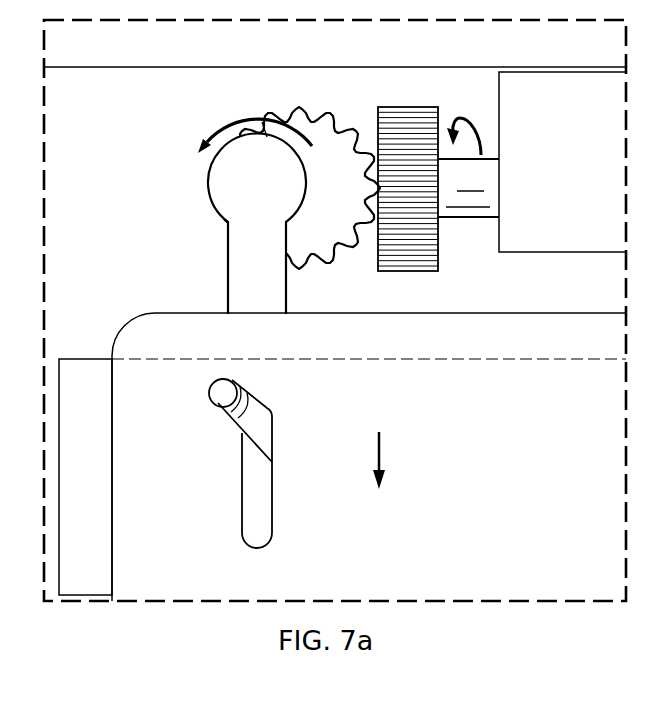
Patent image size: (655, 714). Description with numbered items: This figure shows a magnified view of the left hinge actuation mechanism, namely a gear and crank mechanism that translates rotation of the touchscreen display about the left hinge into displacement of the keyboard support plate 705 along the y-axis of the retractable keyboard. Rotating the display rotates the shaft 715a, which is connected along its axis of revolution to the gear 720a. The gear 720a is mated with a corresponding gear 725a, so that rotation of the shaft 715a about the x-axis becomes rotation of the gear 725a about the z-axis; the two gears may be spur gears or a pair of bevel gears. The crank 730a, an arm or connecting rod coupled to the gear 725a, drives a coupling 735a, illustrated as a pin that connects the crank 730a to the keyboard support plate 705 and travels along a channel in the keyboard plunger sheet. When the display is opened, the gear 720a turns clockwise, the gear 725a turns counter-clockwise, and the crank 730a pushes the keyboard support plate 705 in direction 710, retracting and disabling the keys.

The keyboard support plate 705 is at (84, 366).
The direction 710 is at (381, 450).
The shaft 715a is at (490, 187).
The gear 720a is at (440, 253).
The gear 725a is at (296, 112).
The crank 730a is at (208, 184).
The coupling 735a is at (242, 480).